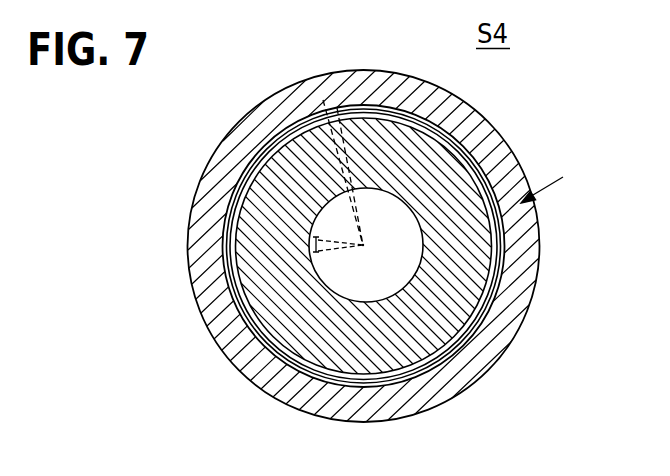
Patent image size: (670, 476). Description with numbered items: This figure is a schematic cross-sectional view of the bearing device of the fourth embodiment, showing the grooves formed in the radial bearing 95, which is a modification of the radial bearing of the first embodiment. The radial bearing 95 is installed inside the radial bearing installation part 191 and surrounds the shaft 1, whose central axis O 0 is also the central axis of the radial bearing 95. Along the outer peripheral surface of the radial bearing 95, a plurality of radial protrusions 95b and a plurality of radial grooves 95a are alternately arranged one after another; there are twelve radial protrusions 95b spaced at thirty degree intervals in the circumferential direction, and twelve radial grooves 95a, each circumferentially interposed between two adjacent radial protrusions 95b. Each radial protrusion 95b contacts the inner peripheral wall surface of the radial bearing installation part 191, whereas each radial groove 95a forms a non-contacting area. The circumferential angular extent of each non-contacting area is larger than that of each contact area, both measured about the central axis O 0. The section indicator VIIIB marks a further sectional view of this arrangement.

The radial bearing installation part 191 is at (470, 103).
The radial bearing 95 is at (435, 260).
The radial groove 95a is at (498, 232).
The radial protrusion 95b is at (487, 284).
The shaft 1 is at (367, 284).
The central axis 0 is at (362, 247).
The section view indicator VIII B VIIIB is at (567, 182).